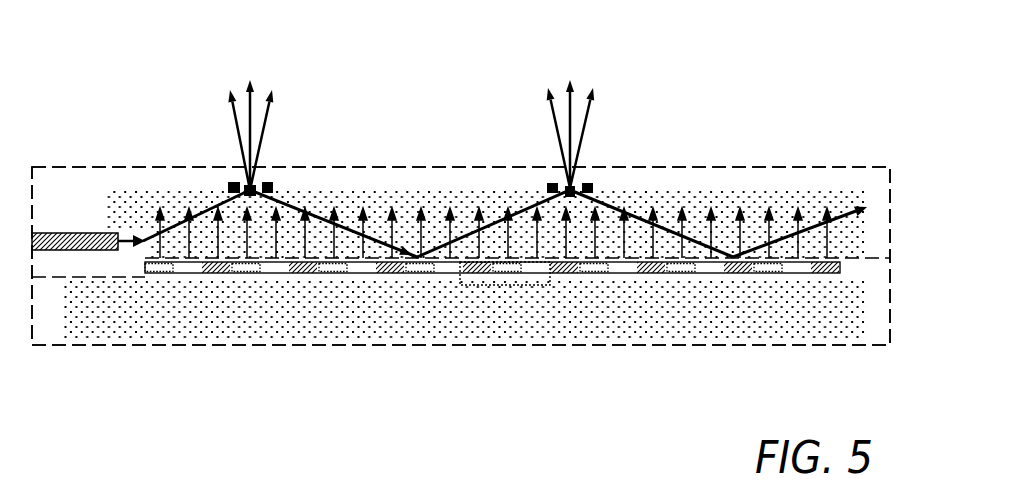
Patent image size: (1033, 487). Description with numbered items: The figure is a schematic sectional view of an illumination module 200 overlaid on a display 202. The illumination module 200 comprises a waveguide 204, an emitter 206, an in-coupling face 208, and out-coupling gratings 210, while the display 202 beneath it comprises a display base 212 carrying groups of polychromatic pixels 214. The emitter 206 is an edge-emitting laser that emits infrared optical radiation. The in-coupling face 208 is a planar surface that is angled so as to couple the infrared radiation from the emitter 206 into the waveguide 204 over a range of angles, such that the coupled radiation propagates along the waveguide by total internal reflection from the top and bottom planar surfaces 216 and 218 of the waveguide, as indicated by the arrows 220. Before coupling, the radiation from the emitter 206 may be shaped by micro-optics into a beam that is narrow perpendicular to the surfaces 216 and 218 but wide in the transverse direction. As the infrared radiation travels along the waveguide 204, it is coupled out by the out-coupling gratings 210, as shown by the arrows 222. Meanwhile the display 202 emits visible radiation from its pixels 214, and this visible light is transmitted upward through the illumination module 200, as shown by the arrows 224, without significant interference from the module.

The illumination module 200 is at (752, 167).
The display 202 is at (842, 347).
The waveguide 204 is at (862, 236).
The emitter 206 is at (55, 232).
The in-coupling face 208 is at (160, 255).
The out-coupling gratings 210 is at (272, 183).
The display base 212 is at (130, 318).
The groups of polychromatic pixels 214 is at (478, 287).
The top planar surface 216 is at (707, 193).
The bottom planar surface 218 is at (853, 258).
The arrows 220 is at (643, 223).
The arrows 222 is at (275, 80).
The arrows 224 is at (479, 208).